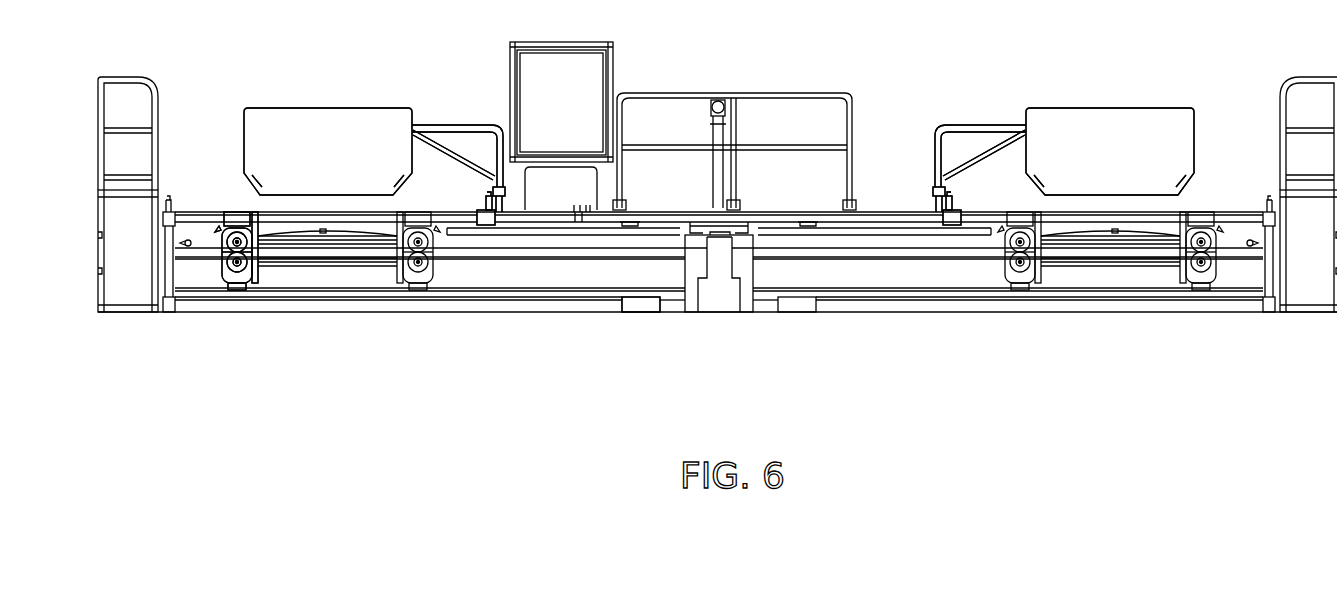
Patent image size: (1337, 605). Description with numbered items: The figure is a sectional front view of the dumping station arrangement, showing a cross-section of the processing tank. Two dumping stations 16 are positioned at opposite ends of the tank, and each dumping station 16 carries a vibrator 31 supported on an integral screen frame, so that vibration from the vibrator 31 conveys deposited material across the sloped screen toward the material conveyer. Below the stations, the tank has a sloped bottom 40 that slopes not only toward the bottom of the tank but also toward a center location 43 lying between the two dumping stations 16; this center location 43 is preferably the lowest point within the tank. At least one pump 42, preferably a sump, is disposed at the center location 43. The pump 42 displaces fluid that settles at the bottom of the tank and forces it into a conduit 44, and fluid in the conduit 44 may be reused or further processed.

The dumping station 16 is at (308, 73).
The vibrator 31 is at (238, 282).
The sloped bottom 40 is at (460, 292).
The pump 42 is at (743, 297).
The center location 43 is at (673, 295).
The conduit 44 is at (717, 100).